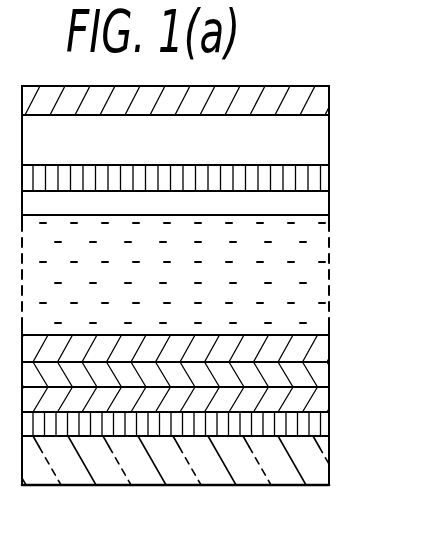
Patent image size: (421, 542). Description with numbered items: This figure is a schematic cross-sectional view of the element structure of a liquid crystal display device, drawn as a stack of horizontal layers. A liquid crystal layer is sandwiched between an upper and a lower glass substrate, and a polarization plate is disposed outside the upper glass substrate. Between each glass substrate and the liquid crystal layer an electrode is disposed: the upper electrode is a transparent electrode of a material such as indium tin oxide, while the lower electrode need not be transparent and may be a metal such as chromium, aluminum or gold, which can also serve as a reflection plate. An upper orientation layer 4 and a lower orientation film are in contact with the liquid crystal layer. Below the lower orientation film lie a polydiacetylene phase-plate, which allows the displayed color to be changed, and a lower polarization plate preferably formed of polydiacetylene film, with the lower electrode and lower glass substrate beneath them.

The orientation layer 4 is at (313, 208).